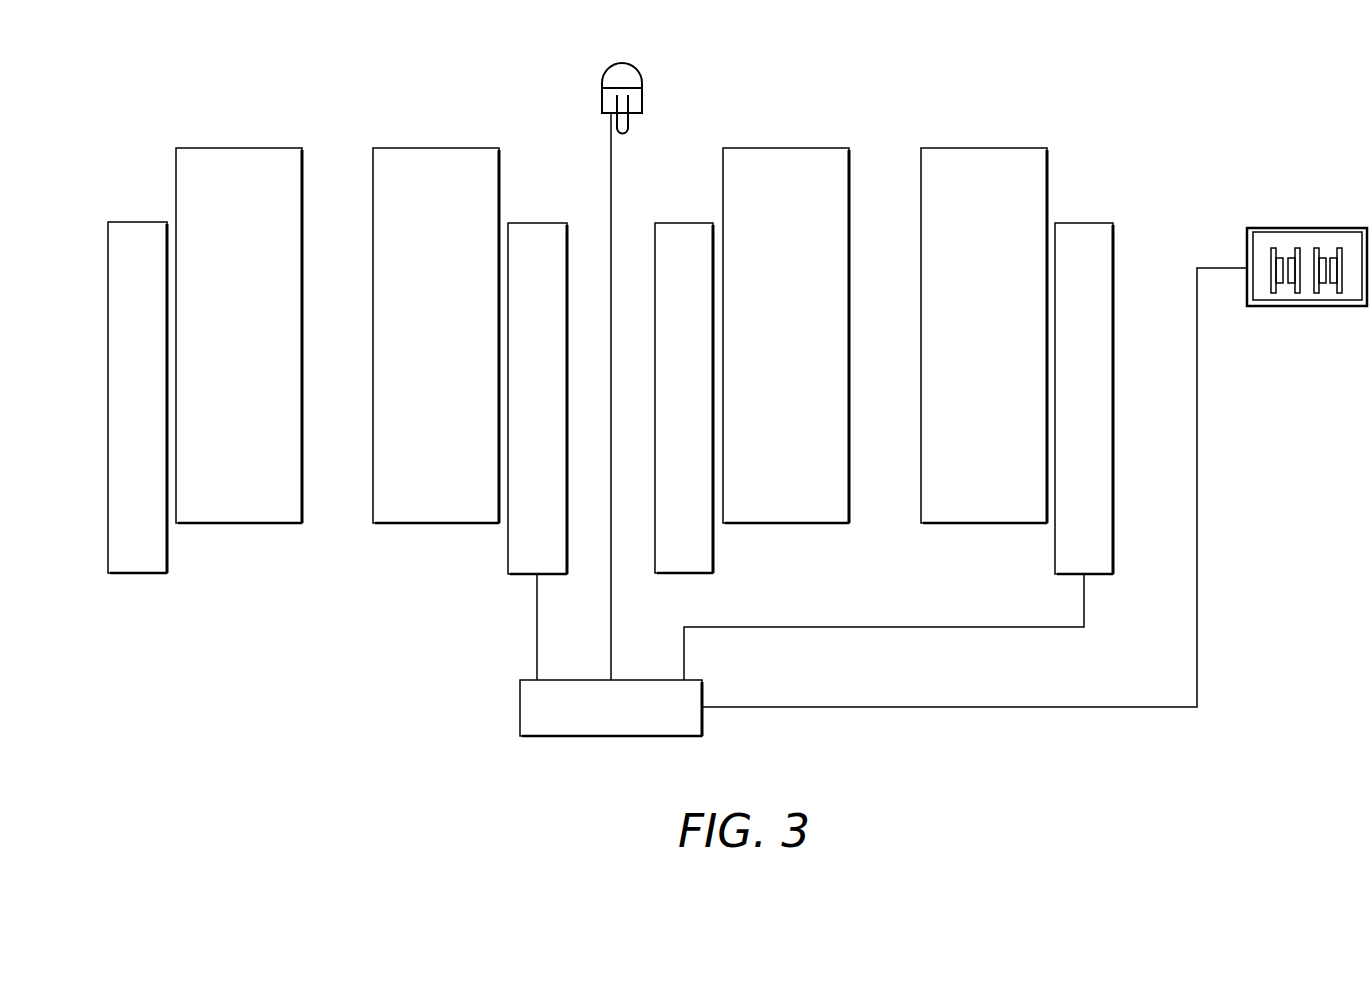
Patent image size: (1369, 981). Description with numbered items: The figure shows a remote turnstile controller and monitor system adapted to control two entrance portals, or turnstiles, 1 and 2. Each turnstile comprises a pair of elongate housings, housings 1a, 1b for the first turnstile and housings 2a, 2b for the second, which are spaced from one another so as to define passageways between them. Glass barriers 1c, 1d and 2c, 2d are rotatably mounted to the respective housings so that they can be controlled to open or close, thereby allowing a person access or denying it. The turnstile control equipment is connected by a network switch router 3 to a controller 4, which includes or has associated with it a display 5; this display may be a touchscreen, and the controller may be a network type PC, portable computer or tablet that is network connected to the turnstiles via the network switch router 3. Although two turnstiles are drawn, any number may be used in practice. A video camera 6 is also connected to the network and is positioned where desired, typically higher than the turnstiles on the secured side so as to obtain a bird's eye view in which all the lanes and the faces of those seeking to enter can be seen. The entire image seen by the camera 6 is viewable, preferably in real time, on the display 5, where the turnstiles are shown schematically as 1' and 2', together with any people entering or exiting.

The entrance portal (turnstile) 1 is at (367, 315).
The elongate housing 1a is at (145, 221).
The elongate housing 1b is at (545, 222).
The glass barrier 1c is at (280, 147).
The glass barrier 1d is at (477, 147).
The entrance portal (turnstile) 2 is at (913, 315).
The elongate housing 2a is at (692, 222).
The elongate housing 2b is at (1092, 222).
The glass barrier 2c is at (828, 147).
The glass barrier 2d is at (1025, 147).
The network switch router 3 is at (520, 690).
The controller 4 is at (1308, 308).
The display 5 is at (1307, 228).
The video camera 6 is at (611, 66).
The schematic representation of turnstile 1' is at (1282, 239).
The schematic representation of turnstile 2' is at (1331, 239).